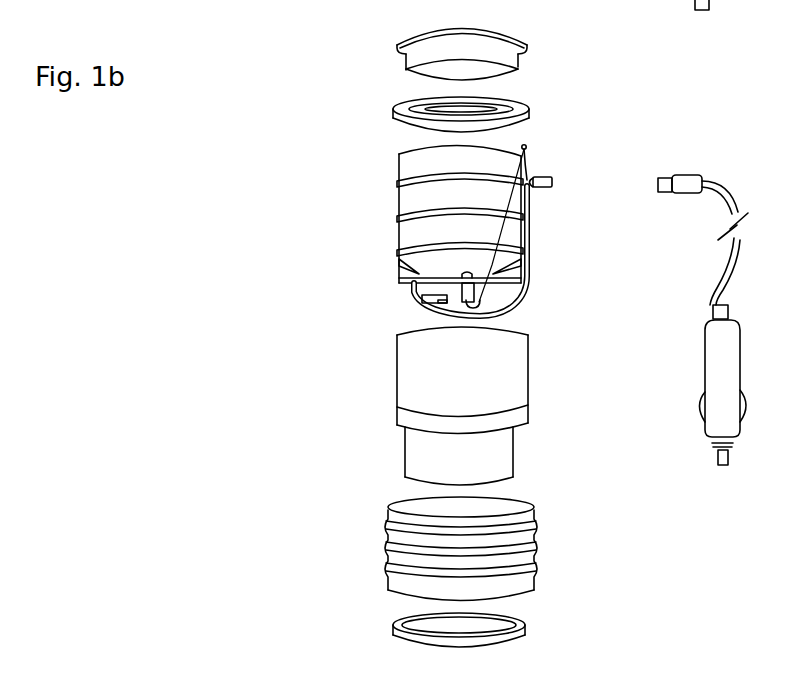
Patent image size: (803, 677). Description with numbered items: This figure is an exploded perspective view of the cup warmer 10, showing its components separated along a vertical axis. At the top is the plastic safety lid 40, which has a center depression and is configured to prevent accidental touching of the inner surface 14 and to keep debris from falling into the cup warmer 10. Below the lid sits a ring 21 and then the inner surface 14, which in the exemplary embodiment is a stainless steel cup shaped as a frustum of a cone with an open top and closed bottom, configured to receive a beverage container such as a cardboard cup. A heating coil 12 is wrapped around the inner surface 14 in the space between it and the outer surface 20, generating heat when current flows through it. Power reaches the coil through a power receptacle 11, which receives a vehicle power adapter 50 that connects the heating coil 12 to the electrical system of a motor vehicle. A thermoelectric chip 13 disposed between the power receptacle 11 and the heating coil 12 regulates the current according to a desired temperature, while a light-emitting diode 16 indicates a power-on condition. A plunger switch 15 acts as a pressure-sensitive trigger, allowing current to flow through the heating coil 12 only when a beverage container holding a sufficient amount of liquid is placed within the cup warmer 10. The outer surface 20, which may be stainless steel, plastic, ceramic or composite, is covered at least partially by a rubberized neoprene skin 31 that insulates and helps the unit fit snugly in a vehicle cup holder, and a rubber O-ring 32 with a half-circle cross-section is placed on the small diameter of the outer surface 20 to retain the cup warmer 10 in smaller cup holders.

The cup warmer 10 is at (441, 323).
The plastic safety lid 40 is at (521, 66).
The lens ring 21 is at (395, 110).
The inner surface 14 is at (420, 169).
The heating coil 12 is at (420, 218).
The power receptacle 11 is at (553, 181).
The light-emitting diode 16 is at (528, 146).
The plunger switch 15 is at (474, 292).
The thermoelectric chip 13 is at (416, 306).
The outer surface 20 is at (530, 385).
The neoprene skin 31 is at (386, 552).
The rubber O-ring 32 is at (527, 630).
The vehicle power adapter 50 is at (731, 217).